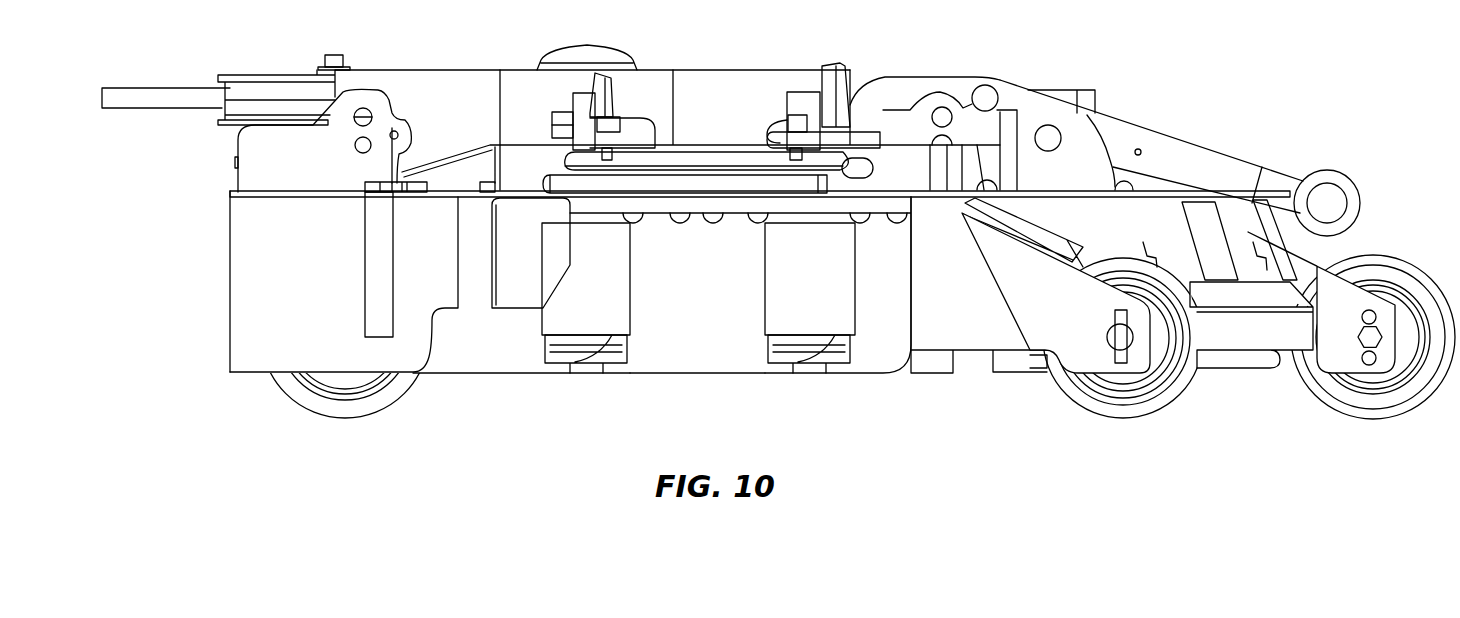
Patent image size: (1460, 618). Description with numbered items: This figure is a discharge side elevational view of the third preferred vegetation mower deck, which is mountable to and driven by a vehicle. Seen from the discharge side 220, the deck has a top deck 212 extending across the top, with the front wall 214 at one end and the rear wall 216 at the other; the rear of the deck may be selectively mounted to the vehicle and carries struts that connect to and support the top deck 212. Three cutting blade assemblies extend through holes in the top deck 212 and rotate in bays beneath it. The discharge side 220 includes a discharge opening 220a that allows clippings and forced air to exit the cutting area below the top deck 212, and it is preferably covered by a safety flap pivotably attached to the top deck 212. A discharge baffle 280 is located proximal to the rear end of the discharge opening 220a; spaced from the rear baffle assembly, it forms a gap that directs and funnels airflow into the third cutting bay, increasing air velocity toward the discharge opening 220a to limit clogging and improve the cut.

The top deck 212 is at (456, 66).
The front wall 214 is at (1155, 222).
The rear wall 216 is at (228, 274).
The discharge side 220 is at (285, 305).
The discharge opening 220a is at (720, 343).
The discharge baffle 280 is at (520, 277).